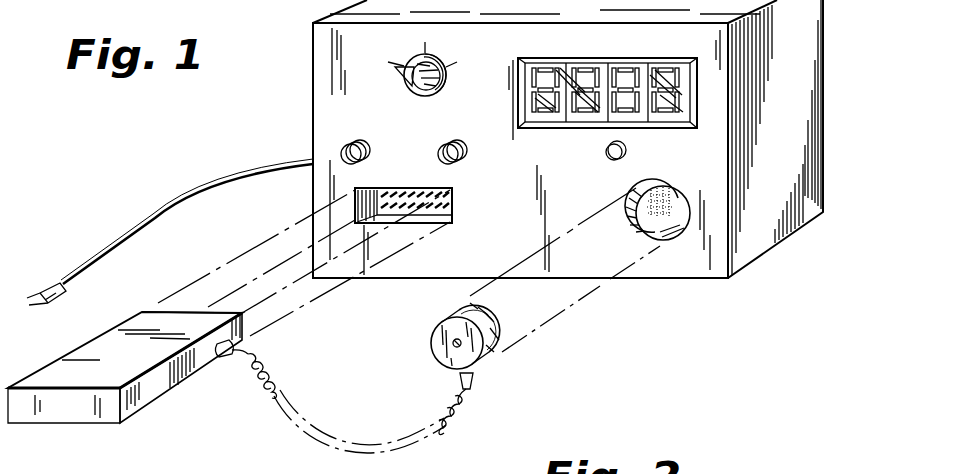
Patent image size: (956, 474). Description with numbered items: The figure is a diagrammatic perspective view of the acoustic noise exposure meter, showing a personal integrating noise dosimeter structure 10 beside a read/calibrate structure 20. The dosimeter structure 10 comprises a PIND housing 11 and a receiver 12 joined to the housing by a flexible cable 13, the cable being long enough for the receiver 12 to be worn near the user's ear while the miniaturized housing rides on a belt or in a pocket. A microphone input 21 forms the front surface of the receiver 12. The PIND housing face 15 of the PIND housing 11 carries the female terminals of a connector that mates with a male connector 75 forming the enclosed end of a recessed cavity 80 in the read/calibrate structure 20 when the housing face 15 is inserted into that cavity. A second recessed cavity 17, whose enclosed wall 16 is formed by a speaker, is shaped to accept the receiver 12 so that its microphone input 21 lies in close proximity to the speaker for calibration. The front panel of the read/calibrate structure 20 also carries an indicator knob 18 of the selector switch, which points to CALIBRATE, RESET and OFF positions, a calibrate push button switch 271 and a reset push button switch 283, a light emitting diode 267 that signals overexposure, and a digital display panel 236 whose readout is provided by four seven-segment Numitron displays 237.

The personal integrating noise dosimeter structure 10 is at (64, 424).
The PIND housing 11 is at (83, 358).
The receiver 12 is at (488, 356).
The flexible cable 13 is at (258, 394).
The PIND housing face 15 is at (183, 312).
The enclosed wall 16 is at (672, 200).
The recessed cavity 17 is at (645, 223).
The indicator knob 18 is at (401, 91).
The read/calibrate structure 20 is at (313, 63).
The microphone input 21 is at (500, 328).
The male connector 75 is at (438, 195).
The recessed cavity 80 is at (436, 225).
The digital display panel 236 is at (620, 61).
The digital Numitron displays 237 is at (584, 105).
The light emitting diode 267 is at (609, 158).
The calibrate push button switch 271 is at (347, 148).
The reset push button switch 283 is at (441, 148).